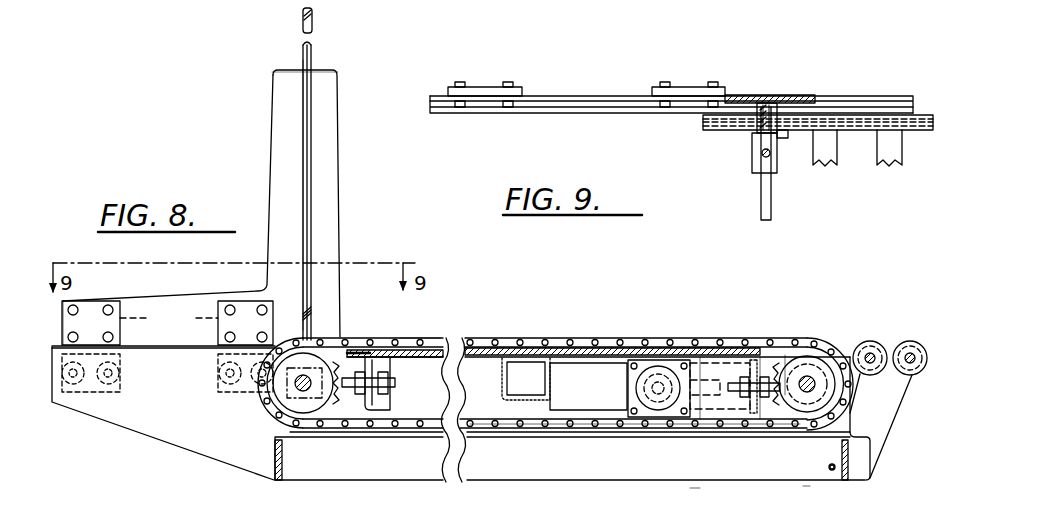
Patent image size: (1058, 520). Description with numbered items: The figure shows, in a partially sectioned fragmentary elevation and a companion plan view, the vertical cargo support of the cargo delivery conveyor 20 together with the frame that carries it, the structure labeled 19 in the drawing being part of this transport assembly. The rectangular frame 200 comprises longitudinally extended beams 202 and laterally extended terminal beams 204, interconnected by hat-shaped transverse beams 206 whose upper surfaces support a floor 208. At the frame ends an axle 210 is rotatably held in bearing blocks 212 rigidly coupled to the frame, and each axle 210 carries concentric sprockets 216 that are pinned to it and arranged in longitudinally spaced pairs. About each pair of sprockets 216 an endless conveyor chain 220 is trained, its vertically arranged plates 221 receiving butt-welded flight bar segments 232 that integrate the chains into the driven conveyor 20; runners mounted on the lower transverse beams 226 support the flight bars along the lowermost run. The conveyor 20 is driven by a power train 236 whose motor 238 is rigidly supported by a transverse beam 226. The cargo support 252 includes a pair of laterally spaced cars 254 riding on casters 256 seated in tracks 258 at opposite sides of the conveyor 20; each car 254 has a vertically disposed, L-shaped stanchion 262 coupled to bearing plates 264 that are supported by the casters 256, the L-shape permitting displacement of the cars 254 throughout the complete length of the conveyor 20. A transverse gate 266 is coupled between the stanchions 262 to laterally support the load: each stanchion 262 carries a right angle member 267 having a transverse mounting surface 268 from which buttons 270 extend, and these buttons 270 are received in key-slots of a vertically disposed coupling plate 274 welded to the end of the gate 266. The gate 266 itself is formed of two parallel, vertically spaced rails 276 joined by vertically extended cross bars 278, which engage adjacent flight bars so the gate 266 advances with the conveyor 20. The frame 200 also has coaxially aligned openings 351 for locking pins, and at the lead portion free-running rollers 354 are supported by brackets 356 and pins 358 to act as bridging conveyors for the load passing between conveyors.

In FIG. 8, the conveyor assembly 19 is at (683, 489).
In FIG. 8, the cargo delivery conveyor 20 is at (582, 337).
In FIG. 8, the rectangular frame 200 is at (805, 490).
In FIG. 8, the longitudinal beam 202 is at (540, 468).
In FIG. 8, the terminal beam 204 is at (381, 412).
In FIG. 8, the hat-shaped transverse beam 206 is at (529, 401).
In FIG. 8, the floor 208 is at (399, 342).
In FIG. 8, the axle 210 is at (296, 390).
In FIG. 8, the bearing block 212 is at (265, 399).
In FIG. 8, the sprocket 216 is at (311, 406).
In FIG. 9, the sprocket 216 is at (745, 134).
In FIG. 8, the endless conveyor chain 220 is at (560, 431).
In FIG. 9, the endless conveyor chain 220 is at (875, 116).
In FIG. 8, the vertical plate 221 is at (445, 433).
In FIG. 8, the lower transverse beam 226 is at (275, 468).
In FIG. 8, the flight bar segment 232 is at (762, 338).
In FIG. 9, the flight bar segment 232 is at (893, 164).
In FIG. 8, the power train 236 is at (682, 414).
In FIG. 8, the motor 238 is at (654, 365).
In FIG. 8, the cargo support 252 is at (330, 64).
In FIG. 9, the cargo support 252 is at (776, 212).
In FIG. 8, the car 254 is at (258, 284).
In FIG. 9, the car 254 is at (551, 93).
In FIG. 8, the caster 256 is at (210, 378).
In FIG. 9, the track 258 is at (599, 108).
In FIG. 8, the stanchion 262 is at (328, 190).
In FIG. 9, the stanchion 262 is at (790, 95).
In FIG. 8, the bearing plate 264 is at (167, 323).
In FIG. 9, the bearing plate 264 is at (478, 90).
In FIG. 8, the transverse gate 266 is at (299, 53).
In FIG. 9, the right angle member 267 is at (770, 105).
In FIG. 9, the transverse mounting surface 268 is at (768, 105).
In FIG. 9, the button 270 is at (750, 143).
In FIG. 9, the coupling plate 274 is at (756, 147).
In FIG. 8, the rail 276 is at (313, 9).
In FIG. 8, the cross bar 278 is at (307, 163).
In FIG. 8, the opening 351 is at (832, 462).
In FIG. 8, the free-running roller 354 is at (912, 342).
In FIG. 8, the bracket 356 is at (897, 405).
In FIG. 8, the pin 358 is at (908, 364).